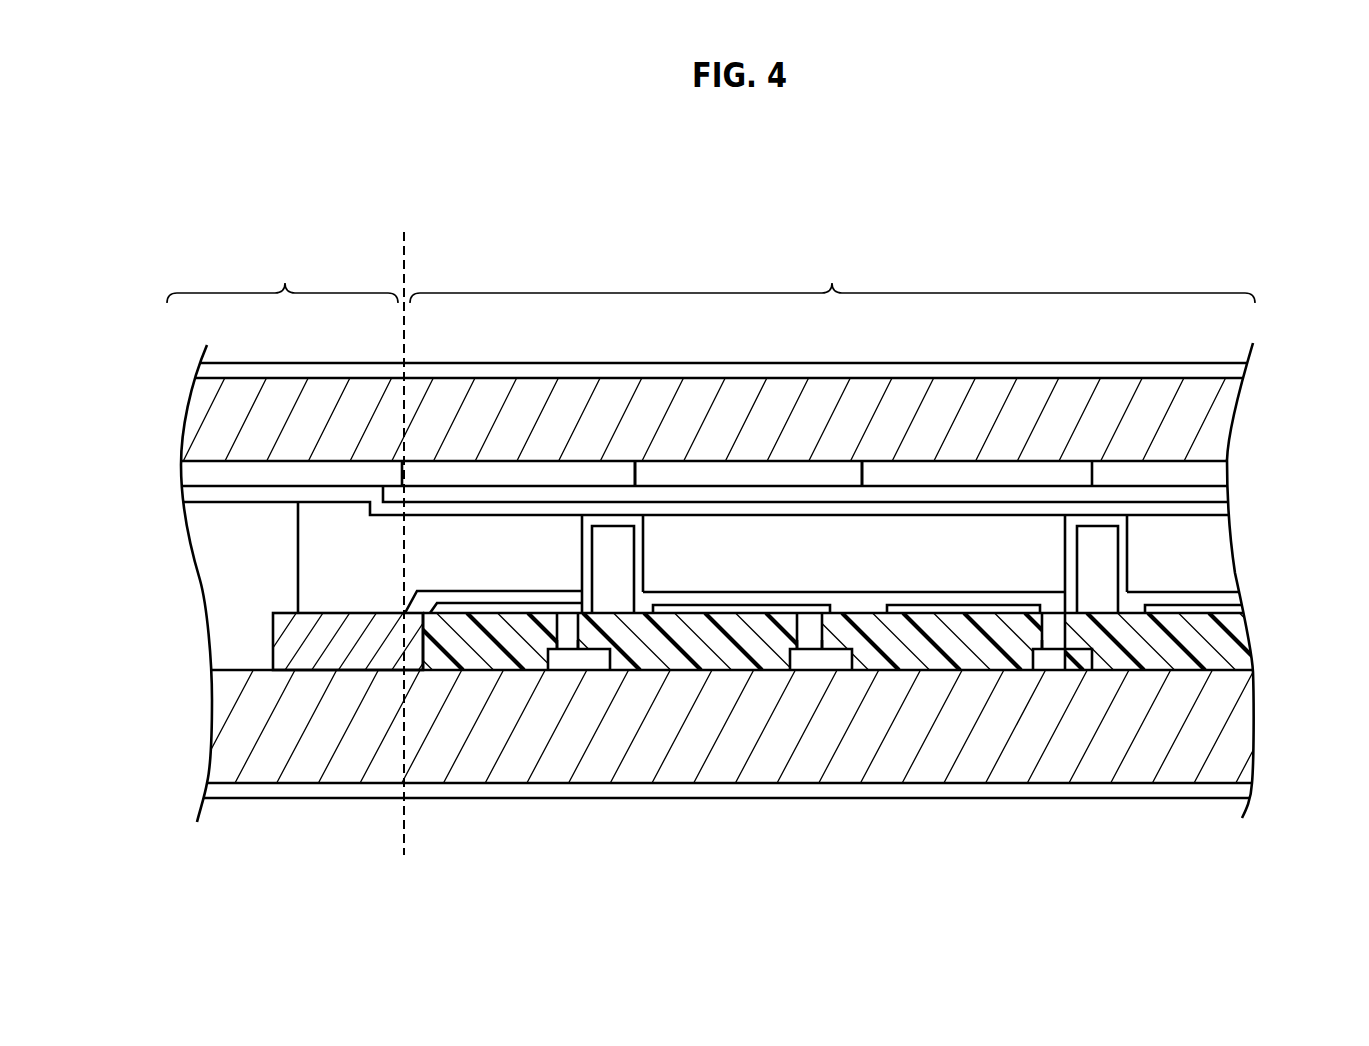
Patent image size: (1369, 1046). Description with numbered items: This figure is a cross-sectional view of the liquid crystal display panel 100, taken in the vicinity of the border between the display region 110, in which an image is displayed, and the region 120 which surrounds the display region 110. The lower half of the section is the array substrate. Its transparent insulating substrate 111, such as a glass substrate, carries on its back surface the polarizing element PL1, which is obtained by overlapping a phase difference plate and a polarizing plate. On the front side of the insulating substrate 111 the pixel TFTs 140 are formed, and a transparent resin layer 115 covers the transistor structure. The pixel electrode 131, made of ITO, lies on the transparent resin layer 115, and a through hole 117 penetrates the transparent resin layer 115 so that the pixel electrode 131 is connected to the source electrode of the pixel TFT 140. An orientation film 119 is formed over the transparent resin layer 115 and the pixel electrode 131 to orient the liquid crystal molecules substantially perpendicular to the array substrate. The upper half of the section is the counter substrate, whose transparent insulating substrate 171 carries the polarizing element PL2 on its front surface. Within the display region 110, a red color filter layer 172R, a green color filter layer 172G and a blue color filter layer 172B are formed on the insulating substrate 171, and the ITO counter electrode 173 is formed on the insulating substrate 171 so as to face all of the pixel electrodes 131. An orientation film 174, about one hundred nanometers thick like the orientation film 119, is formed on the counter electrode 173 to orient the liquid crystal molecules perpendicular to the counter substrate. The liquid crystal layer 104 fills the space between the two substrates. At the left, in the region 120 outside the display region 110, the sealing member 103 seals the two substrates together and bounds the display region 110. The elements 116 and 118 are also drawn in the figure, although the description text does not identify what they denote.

The liquid crystal display panel 100 is at (1313, 163).
The region surrounding the display region 120 is at (285, 543).
The display region 110 is at (832, 272).
The red color filter layer 172R is at (517, 470).
The green color filter layer 172G is at (733, 470).
The blue color filter layer 172B is at (972, 470).
The polarizing element PL2 is at (1237, 373).
The transparent insulating substrate 171 is at (1227, 420).
The counter electrode 173 is at (1218, 495).
The orientation film 174 is at (1218, 515).
The liquid crystal layer 104 is at (1218, 557).
The sealing member 103 is at (222, 576).
The light blocking / edge layer 116 is at (293, 647).
The pixel electrode 131 is at (948, 610).
The column spacer 118 is at (1088, 556).
The orientation film 119 is at (860, 600).
The transparent resin layer 115 is at (1230, 645).
The through hole 117 is at (1035, 817).
The pixel TFT 140 is at (1078, 837).
The transparent insulating substrate 111 is at (1240, 727).
The polarizing element PL1 is at (1238, 793).